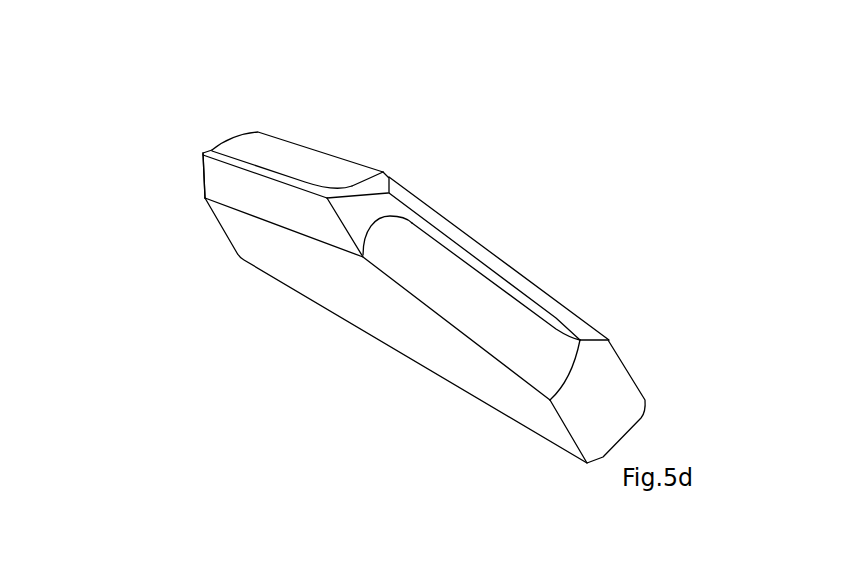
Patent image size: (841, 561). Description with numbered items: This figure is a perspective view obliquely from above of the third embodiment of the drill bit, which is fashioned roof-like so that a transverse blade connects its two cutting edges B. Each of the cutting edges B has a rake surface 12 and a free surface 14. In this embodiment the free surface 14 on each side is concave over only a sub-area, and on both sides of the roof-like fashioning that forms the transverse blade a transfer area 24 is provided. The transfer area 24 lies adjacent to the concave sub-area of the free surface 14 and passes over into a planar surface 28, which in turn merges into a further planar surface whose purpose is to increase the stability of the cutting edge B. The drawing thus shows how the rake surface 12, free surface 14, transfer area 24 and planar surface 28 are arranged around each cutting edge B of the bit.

The rake surface 12 is at (295, 207).
The free surface 14 is at (307, 167).
The transfer area 24 is at (388, 233).
The planar surface 28 is at (353, 210).
The cutting edge B is at (225, 177).